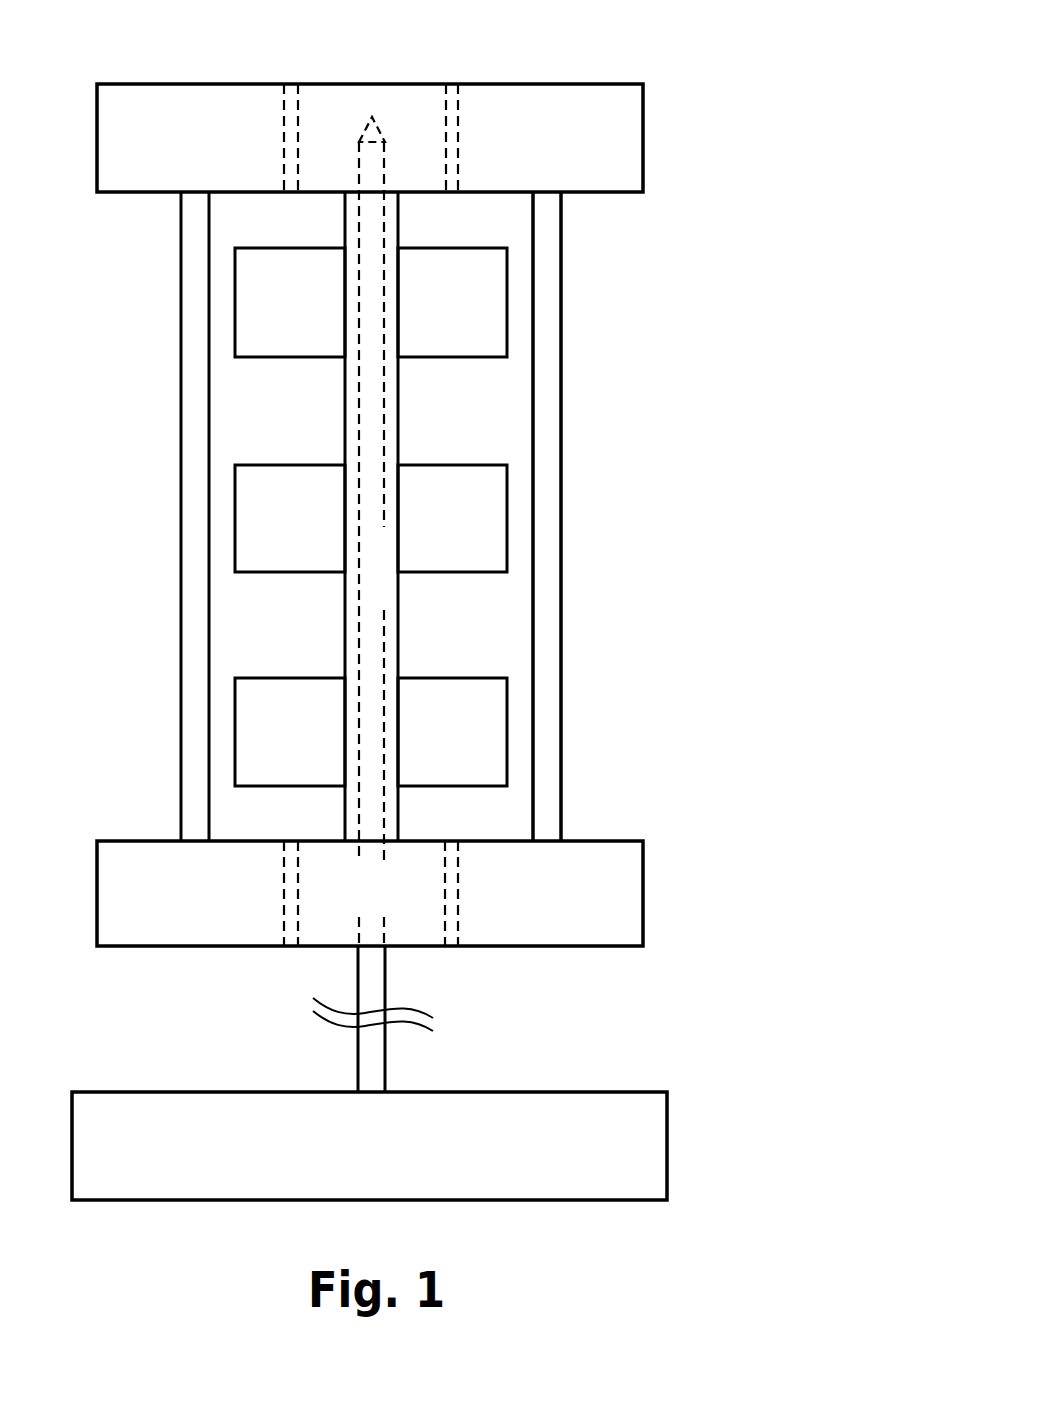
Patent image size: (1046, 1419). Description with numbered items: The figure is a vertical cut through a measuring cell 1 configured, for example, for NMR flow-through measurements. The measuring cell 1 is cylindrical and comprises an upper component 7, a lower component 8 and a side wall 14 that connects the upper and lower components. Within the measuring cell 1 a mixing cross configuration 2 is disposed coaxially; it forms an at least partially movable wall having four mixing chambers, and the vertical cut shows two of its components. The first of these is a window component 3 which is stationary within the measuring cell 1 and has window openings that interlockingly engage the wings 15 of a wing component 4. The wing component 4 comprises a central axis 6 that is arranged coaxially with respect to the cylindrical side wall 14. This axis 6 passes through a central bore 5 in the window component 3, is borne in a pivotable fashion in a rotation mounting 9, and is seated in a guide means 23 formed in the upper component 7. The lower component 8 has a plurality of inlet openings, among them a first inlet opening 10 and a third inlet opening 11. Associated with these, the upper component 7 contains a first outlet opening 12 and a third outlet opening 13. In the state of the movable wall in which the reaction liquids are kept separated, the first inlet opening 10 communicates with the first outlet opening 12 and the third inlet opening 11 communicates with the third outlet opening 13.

The measuring cell 1 is at (598, 287).
The mixing cross configuration 2 is at (537, 502).
The window component 3 is at (493, 620).
The wing component 4 is at (507, 730).
The central bore 5 is at (372, 235).
The central axis 6 is at (367, 980).
The upper component 7 is at (613, 105).
The lower component 8 is at (614, 890).
The rotation mounting 9 is at (638, 1132).
The first inlet opening 10 is at (457, 893).
The third inlet opening 11 is at (285, 898).
The first outlet opening 12 is at (448, 83).
The third outlet opening 13 is at (293, 83).
The side wall 14 is at (562, 378).
The wings 15 is at (255, 322).
The guide means 23 is at (385, 158).